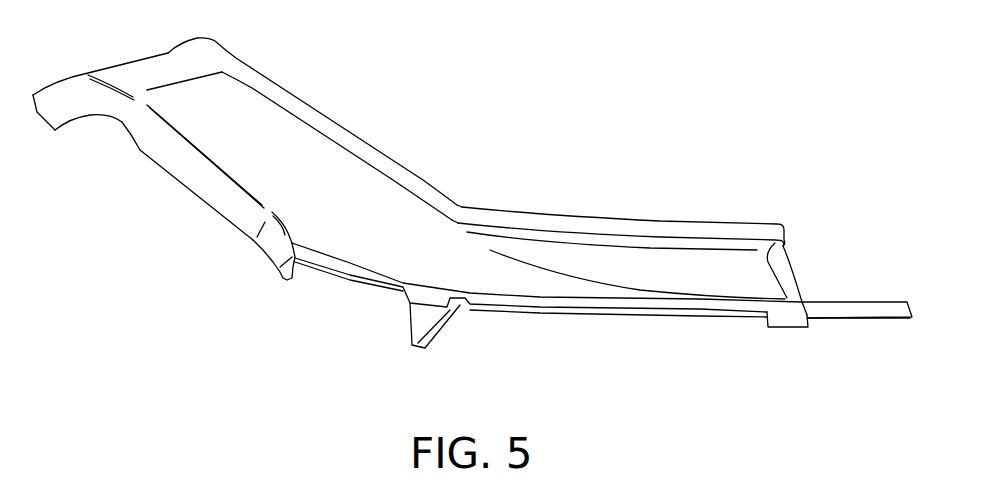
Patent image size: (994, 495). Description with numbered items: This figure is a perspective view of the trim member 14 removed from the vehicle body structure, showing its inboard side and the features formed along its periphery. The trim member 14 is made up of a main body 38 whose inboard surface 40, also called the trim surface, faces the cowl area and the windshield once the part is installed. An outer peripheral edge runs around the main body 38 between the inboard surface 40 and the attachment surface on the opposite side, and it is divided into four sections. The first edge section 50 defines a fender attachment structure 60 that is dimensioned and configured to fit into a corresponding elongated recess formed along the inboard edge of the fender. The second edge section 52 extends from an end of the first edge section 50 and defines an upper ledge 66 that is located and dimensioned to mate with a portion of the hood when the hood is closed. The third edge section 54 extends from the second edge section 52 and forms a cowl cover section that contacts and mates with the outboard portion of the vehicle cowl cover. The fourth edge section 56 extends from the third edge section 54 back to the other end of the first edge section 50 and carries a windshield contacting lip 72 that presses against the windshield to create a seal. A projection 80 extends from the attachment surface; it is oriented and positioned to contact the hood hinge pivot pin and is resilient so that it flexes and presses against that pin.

The trim member 14 is at (566, 130).
The main body 38 is at (254, 147).
The inboard surface 40 is at (378, 220).
The first edge section 50 is at (570, 318).
The second edge section 52 is at (193, 197).
The third edge section 54 is at (127, 67).
The fourth edge section 56 is at (458, 208).
The fender attachment structure 60 is at (627, 305).
The upper ledge 66 is at (126, 110).
The windshield contacting lip 72 is at (604, 223).
The projection 80 is at (438, 333).